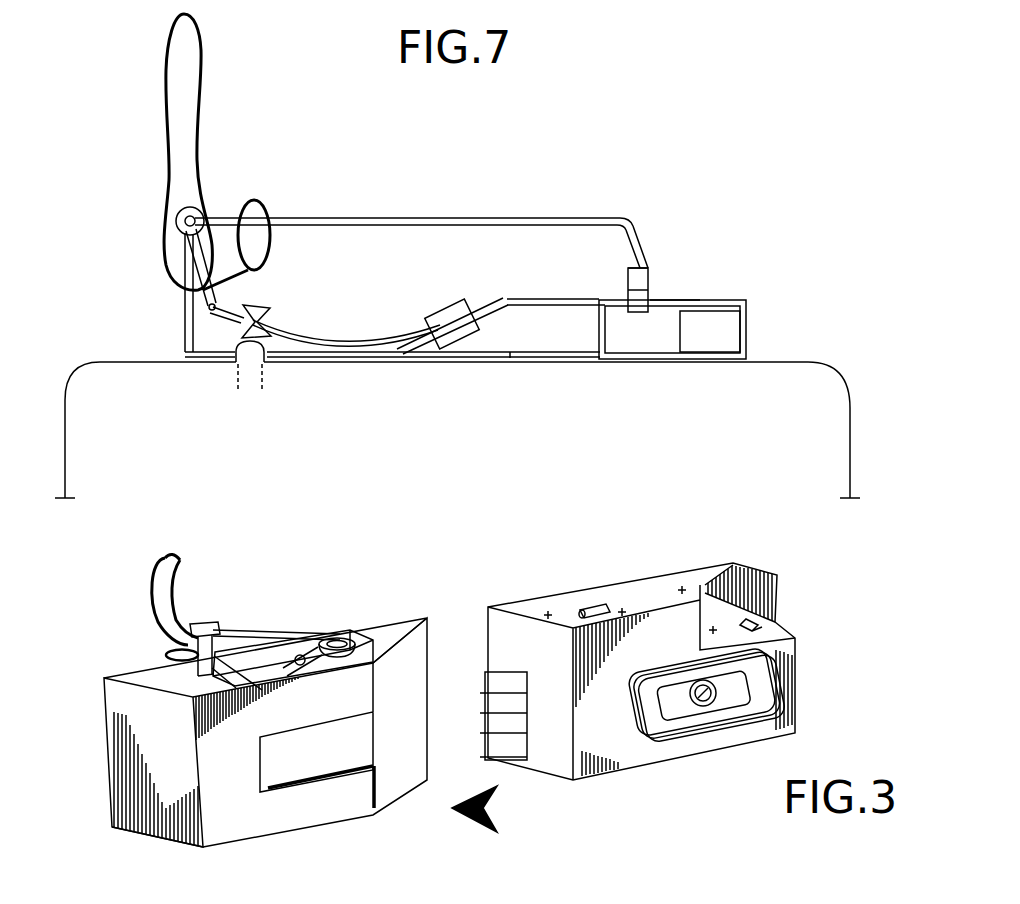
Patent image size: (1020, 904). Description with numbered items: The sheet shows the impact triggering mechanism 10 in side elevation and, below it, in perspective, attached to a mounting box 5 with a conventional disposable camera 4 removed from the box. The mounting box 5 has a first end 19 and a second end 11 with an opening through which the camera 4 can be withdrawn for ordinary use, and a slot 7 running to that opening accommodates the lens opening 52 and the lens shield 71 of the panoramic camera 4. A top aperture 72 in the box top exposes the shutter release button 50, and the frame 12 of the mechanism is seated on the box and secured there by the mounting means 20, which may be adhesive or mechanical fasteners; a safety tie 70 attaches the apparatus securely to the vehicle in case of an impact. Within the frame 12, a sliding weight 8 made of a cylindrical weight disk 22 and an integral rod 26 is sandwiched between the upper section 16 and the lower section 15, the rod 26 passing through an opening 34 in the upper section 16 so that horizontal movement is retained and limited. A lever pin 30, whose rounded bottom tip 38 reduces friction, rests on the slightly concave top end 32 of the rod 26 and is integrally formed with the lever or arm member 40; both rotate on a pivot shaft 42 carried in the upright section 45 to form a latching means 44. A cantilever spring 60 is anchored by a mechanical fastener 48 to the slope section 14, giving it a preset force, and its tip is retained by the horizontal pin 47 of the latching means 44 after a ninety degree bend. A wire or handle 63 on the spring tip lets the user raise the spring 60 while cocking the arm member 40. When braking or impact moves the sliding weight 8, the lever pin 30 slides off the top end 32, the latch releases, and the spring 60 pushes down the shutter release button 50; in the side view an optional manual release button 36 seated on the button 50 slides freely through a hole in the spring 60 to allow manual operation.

In FIG. 7, the disposable camera 4 is at (853, 452).
In FIG. 3, the disposable camera 4 is at (776, 569).
In FIG. 3, the mounting box 5 is at (110, 811).
In FIG. 3, the slot 7 is at (293, 780).
In FIG. 7, the sliding weight 8 is at (649, 276).
In FIG. 7, the impact triggering mechanism 10 is at (534, 129).
In FIG. 3, the impact triggering mechanism 10 is at (366, 624).
In FIG. 3, the second end 11 is at (373, 683).
In FIG. 7, the frame 12 is at (748, 320).
In FIG. 3, the frame 12 is at (267, 650).
In FIG. 7, the slope section 14 is at (440, 356).
In FIG. 7, the lower section 15 is at (480, 360).
In FIG. 7, the upper section 16 is at (533, 308).
In FIG. 3, the first end 19 is at (183, 770).
In FIG. 7, the mounting means 20 is at (713, 363).
In FIG. 3, the mounting means 20 is at (352, 673).
In FIG. 7, the cylindrical weight disk 22 is at (612, 345).
In FIG. 7, the rod 26 is at (629, 282).
In FIG. 7, the lever pin 30 is at (638, 243).
In FIG. 7, the top end 32 is at (650, 266).
In FIG. 7, the opening 34 is at (664, 300).
In FIG. 7, the manual release button 36 is at (260, 312).
In FIG. 7, the bottom tip 38 is at (624, 265).
In FIG. 7, the lever or arm member 40 is at (403, 216).
In FIG. 7, the pivot shaft 42 is at (176, 215).
In FIG. 7, the latching means 44 is at (228, 232).
In FIG. 7, the upright section 45 is at (183, 296).
In FIG. 7, the horizontal pin 47 is at (210, 311).
In FIG. 7, the mechanical fastener 48 is at (447, 308).
In FIG. 7, the shutter release button 50 is at (237, 380).
In FIG. 3, the shutter release button 50 is at (590, 603).
In FIG. 3, the lens opening 52 is at (710, 702).
In FIG. 7, the cantilever spring 60 is at (388, 338).
In FIG. 7, the wire or handle 63 is at (262, 203).
In FIG. 3, the wire or handle 63 is at (167, 655).
In FIG. 7, the safety tie 70 is at (167, 60).
In FIG. 3, the safety tie 70 is at (172, 563).
In FIG. 3, the lens shield 71 is at (637, 738).
In FIG. 3, the top aperture 72 is at (193, 677).